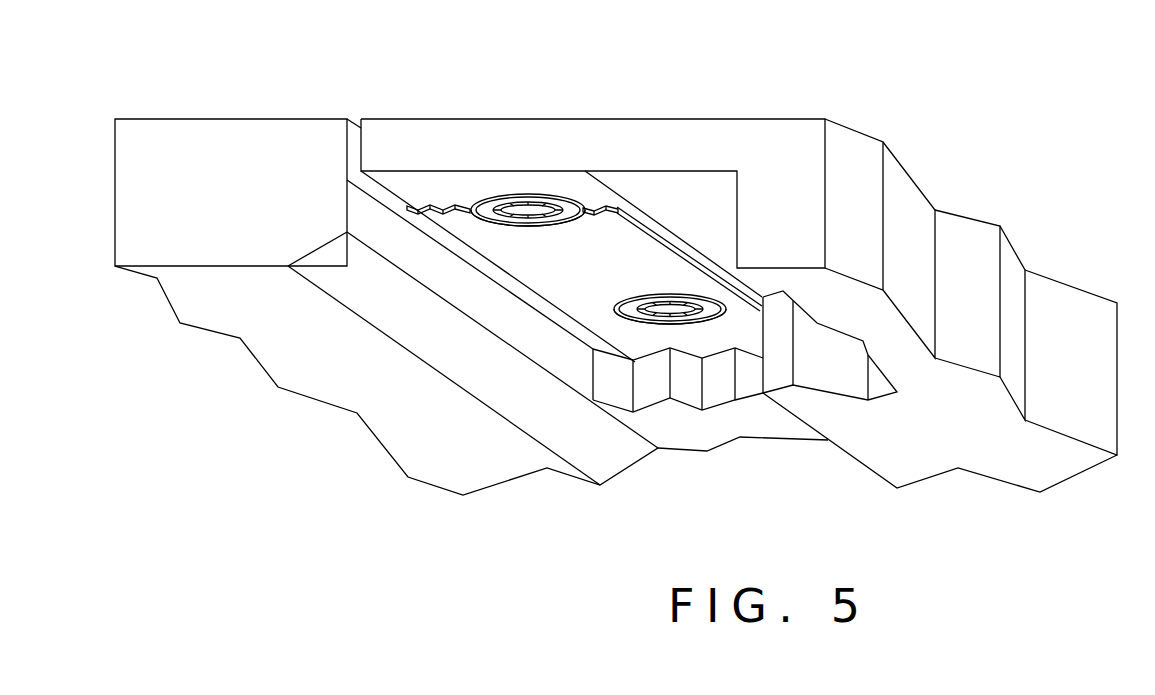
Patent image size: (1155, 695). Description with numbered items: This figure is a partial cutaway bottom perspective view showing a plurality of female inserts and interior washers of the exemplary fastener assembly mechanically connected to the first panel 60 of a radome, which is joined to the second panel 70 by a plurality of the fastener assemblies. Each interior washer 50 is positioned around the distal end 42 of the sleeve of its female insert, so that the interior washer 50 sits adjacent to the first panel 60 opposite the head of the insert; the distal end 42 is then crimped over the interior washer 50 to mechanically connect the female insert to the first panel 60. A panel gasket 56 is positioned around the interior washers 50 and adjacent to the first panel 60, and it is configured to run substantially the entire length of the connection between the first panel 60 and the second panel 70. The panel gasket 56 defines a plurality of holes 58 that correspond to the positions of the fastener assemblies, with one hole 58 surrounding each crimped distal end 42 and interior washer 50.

The distal end 42 is at (550, 207).
The interior washer 50 is at (500, 198).
The panel gasket 56 is at (430, 207).
The holes 58 is at (585, 222).
The first panel 60 is at (757, 119).
The second panel 70 is at (233, 266).